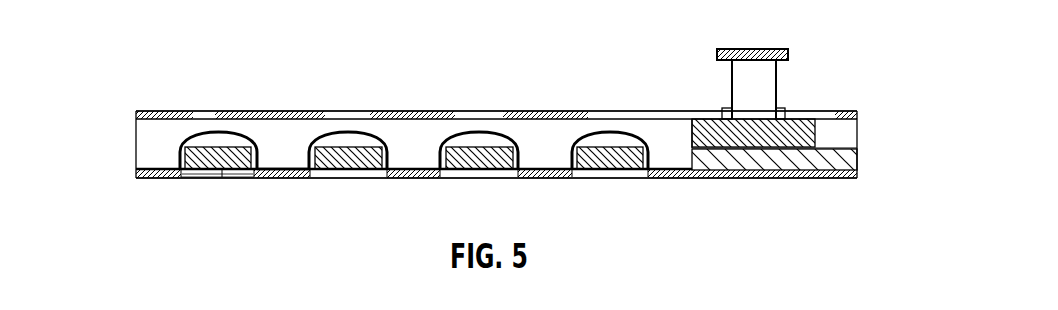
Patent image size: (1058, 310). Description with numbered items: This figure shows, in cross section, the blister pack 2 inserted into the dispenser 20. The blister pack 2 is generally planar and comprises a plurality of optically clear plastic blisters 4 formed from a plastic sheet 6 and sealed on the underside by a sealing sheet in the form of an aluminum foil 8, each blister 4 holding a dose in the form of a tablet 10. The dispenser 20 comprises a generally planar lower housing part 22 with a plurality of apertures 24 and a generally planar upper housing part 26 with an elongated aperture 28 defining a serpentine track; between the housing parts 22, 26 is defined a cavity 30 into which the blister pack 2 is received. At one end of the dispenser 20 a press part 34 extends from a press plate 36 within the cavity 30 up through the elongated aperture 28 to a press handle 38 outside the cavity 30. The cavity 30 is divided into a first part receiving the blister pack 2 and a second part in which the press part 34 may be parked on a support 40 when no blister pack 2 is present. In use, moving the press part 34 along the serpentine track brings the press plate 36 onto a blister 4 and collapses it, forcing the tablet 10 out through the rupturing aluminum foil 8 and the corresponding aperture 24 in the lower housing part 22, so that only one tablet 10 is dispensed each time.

The blister pack 2 is at (152, 155).
The blister 4 is at (250, 143).
The plastic sheet 6 is at (280, 167).
The aluminum foil 8 is at (220, 178).
The tablet 10 is at (203, 150).
The dispenser 20 is at (183, 60).
The lower housing part 22 is at (287, 180).
The aperture 24 is at (193, 180).
The upper housing part 26 is at (553, 110).
The elongated aperture 28 is at (652, 113).
The cavity 30 is at (152, 138).
The press part 34 is at (825, 35).
The press plate 36 is at (792, 130).
The press handle 38 is at (753, 49).
The support 40 is at (848, 157).